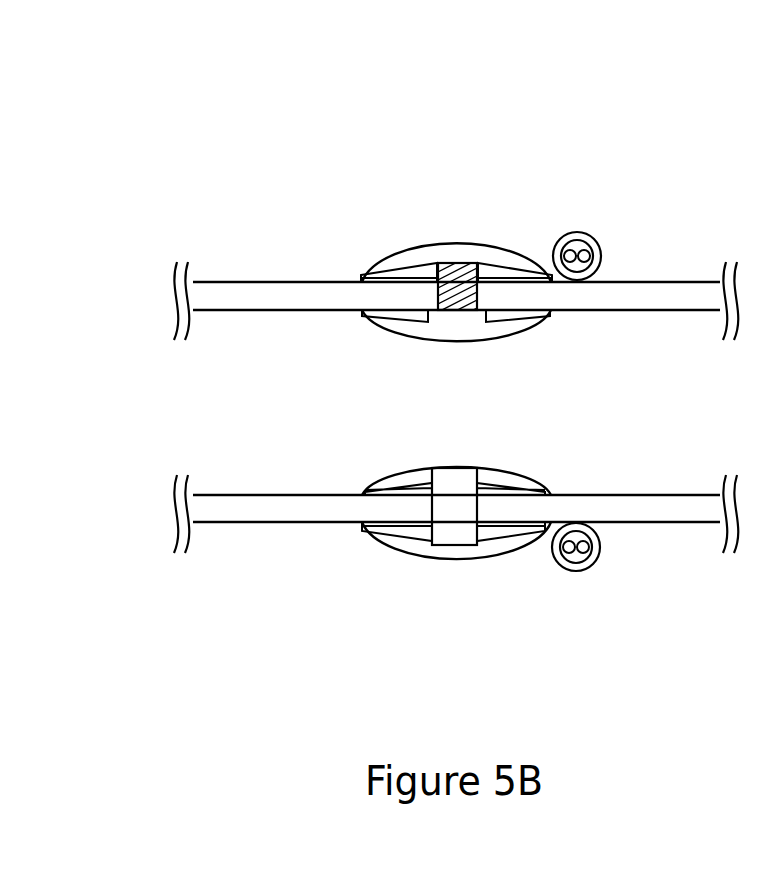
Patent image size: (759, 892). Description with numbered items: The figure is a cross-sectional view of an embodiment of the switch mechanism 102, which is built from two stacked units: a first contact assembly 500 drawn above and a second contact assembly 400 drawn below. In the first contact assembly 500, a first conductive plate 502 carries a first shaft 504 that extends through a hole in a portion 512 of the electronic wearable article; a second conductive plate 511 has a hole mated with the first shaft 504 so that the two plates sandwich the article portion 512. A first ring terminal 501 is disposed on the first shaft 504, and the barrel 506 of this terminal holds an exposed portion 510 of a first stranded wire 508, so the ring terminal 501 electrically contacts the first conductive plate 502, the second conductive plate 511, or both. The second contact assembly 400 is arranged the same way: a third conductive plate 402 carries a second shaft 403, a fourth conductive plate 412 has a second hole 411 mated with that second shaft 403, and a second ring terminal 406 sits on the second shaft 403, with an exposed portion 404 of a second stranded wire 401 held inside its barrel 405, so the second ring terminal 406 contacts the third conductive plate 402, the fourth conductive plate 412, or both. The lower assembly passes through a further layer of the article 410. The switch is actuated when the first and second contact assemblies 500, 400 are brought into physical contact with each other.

The switch mechanism 102 is at (137, 173).
The first contact assembly 500 is at (398, 156).
The first ring terminal 501 is at (360, 274).
The first conductive plate 502 is at (398, 247).
The first shaft 504 is at (456, 262).
The barrel 506 is at (575, 232).
The first stranded wire 508 is at (582, 243).
The exposed portion 510 is at (601, 253).
The second conductive plate 511 is at (531, 330).
The portion of the electronic wearable article 512 is at (245, 311).
The second contact assembly 400 is at (218, 658).
The second stranded wire 401 is at (580, 565).
The third conductive plate 402 is at (440, 560).
The second shaft 403 is at (455, 500).
The exposed portion 404 is at (599, 548).
The barrel 405 is at (575, 572).
The second ring terminal 406 is at (357, 536).
The panel 410 is at (265, 494).
The second hole 411 is at (428, 482).
The fourth conductive plate 412 is at (372, 487).